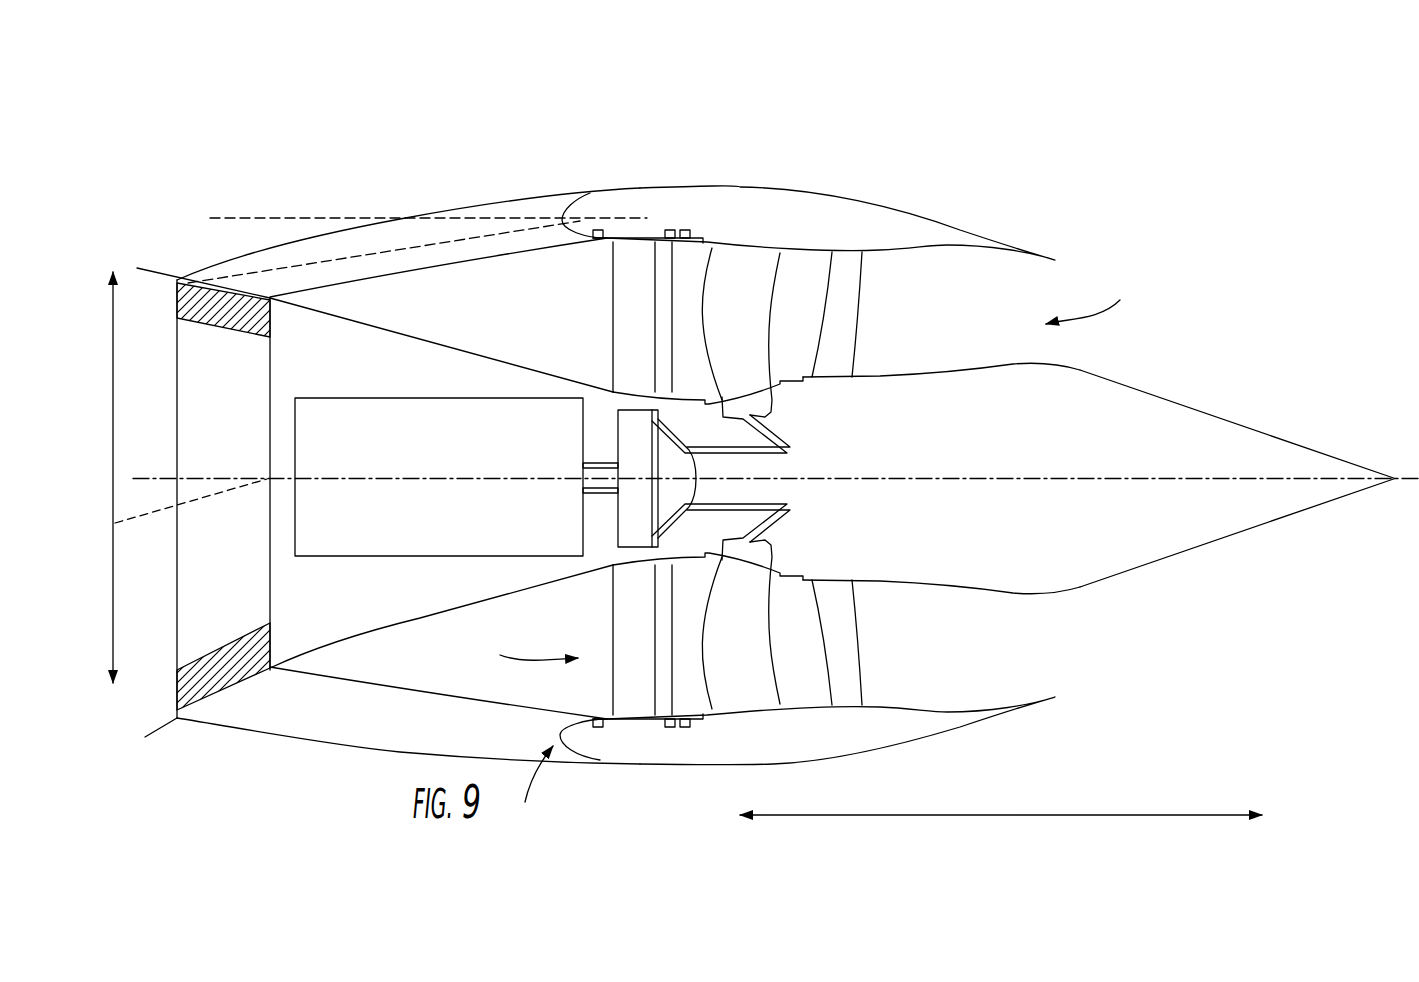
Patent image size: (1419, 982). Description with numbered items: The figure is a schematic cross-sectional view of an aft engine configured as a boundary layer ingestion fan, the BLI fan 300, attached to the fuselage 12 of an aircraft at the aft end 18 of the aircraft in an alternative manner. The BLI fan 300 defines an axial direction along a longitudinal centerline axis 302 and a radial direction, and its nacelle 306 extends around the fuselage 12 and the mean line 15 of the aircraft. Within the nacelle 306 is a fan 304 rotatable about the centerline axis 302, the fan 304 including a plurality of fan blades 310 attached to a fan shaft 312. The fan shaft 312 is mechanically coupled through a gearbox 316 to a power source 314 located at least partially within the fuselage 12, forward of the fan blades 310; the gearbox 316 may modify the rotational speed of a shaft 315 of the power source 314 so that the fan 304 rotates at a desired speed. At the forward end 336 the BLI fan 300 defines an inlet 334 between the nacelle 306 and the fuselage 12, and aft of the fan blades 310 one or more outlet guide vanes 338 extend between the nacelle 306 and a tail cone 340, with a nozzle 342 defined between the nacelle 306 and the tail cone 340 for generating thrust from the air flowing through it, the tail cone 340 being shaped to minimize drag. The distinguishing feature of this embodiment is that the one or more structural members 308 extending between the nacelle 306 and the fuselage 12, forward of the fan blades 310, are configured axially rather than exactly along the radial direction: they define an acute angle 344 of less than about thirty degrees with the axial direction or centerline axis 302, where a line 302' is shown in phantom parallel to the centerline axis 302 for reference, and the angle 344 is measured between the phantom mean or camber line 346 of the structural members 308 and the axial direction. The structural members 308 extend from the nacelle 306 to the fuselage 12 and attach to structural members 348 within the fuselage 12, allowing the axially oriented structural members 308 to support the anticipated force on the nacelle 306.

The fuselage 12 is at (218, 275).
The mean line 15 is at (1163, 478).
The aft end 18 is at (928, 125).
The BLI fan 300 is at (1133, 209).
The centerline axis 302 is at (1237, 478).
The phantom reference line 302' is at (428, 178).
The fan 304 is at (753, 274).
The nacelle 306 is at (787, 186).
The structural members 308 is at (480, 213).
The fan blades 310 is at (782, 298).
The fan shaft 312 is at (790, 462).
The power source 314 is at (483, 396).
The shaft 315 is at (602, 556).
The gearbox 316 is at (630, 430).
The inlet 334 is at (530, 638).
The forward end 336 is at (528, 791).
The outlet guide vanes 338 is at (845, 648).
The tail cone 340 is at (1150, 383).
The nozzle 342 is at (1100, 293).
The acute angle 344 is at (491, 234).
The mean/camber line 346 is at (360, 252).
The structural members within the fuselage 348 is at (205, 360).